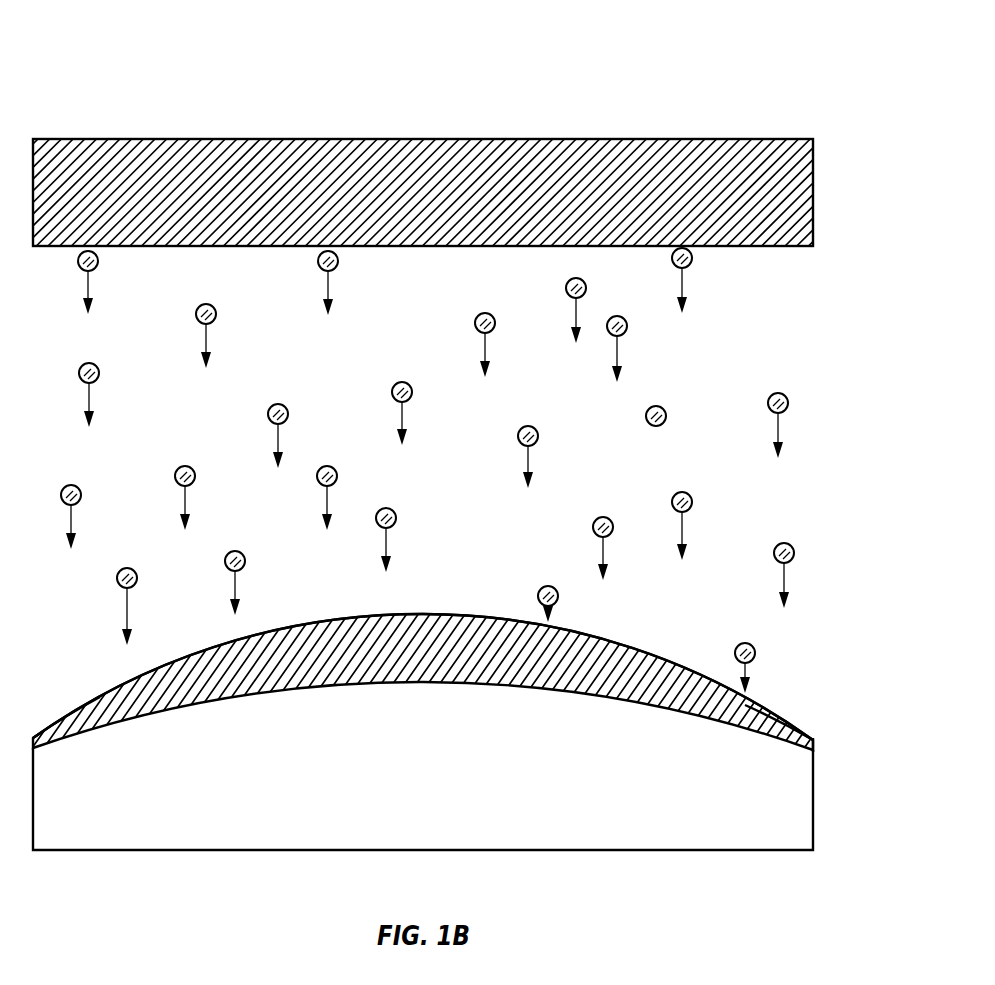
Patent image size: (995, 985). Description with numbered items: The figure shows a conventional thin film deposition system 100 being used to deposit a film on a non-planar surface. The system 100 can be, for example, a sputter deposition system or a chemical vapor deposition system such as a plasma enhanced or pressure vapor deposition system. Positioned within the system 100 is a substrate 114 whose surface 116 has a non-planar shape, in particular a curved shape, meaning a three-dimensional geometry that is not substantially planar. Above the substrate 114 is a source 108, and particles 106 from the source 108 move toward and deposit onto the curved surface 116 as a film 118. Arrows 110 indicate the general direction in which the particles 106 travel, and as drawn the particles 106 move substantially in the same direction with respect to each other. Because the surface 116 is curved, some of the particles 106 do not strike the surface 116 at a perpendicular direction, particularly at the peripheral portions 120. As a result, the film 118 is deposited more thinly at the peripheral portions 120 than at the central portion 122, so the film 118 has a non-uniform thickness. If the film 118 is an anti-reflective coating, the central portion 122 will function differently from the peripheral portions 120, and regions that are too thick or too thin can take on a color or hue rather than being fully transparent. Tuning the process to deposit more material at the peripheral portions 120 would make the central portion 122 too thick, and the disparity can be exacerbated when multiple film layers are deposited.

The deposition system 100 is at (90, 62).
The source 108 is at (418, 201).
The particles 106 is at (413, 392).
The arrows 110 is at (403, 417).
The film 118 is at (418, 658).
The central portion 122 is at (427, 613).
The peripheral portions 120 is at (94, 700).
The surface 116 is at (815, 750).
The substrate 114 is at (415, 783).